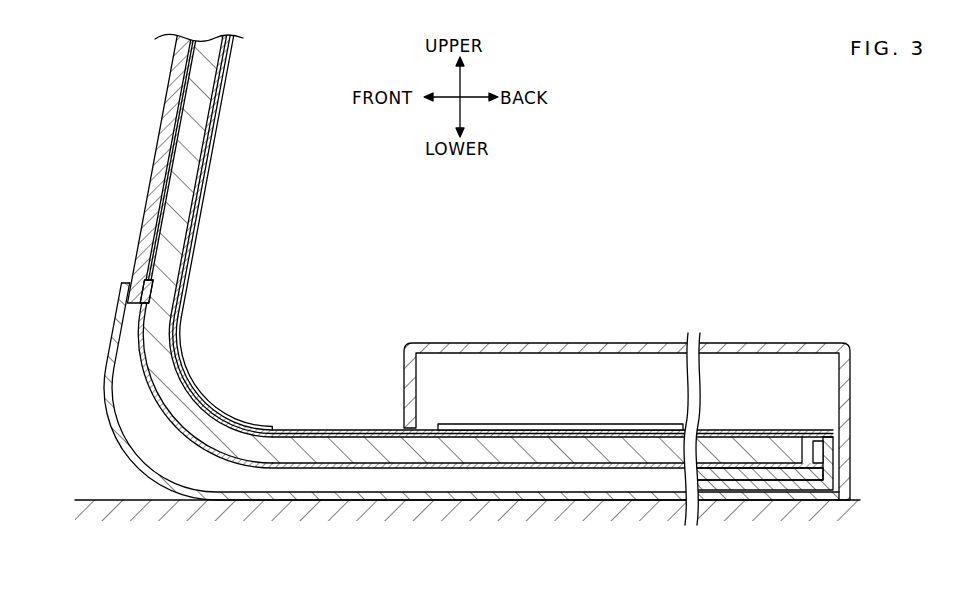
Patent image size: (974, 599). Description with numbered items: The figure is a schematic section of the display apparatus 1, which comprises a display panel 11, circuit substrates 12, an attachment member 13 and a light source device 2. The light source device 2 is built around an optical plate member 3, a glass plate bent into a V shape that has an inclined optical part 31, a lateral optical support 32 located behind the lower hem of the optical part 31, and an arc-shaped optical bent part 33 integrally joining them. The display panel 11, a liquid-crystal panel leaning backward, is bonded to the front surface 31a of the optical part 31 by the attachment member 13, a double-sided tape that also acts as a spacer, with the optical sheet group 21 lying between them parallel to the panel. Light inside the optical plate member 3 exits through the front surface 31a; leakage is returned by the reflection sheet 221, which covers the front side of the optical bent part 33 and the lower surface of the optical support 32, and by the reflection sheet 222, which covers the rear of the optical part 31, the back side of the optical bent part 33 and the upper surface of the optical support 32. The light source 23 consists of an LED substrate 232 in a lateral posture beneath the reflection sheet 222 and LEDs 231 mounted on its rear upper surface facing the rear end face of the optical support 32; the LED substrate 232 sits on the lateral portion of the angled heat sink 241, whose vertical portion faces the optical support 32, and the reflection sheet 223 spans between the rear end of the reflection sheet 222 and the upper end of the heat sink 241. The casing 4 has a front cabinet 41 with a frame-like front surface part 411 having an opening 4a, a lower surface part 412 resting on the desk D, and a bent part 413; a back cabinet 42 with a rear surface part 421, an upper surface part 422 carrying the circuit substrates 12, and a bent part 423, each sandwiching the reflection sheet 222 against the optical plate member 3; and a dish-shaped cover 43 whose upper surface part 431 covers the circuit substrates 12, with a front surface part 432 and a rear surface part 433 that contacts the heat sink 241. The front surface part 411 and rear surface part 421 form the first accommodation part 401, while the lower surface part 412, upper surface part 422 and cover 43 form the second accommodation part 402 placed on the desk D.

The display apparatus 1 is at (770, 175).
The light source device 2 is at (256, 362).
The optical sheet group 21 is at (172, 141).
The reflection sheet 221 is at (152, 393).
The reflection sheet 222 is at (174, 345).
The reflection sheet 223 is at (812, 434).
The optical plate member 3 is at (186, 186).
The optical part 31 is at (187, 231).
The front surface 31a is at (169, 183).
The optical support 32 is at (497, 455).
The optical bent part 33 is at (188, 392).
The casing 4 is at (442, 302).
The opening 4a is at (132, 281).
The front cabinet 41 is at (377, 491).
The front surface part 411 is at (123, 290).
The lower surface part 412 is at (386, 497).
The bent part 413 is at (125, 444).
The back cabinet 42 is at (350, 428).
The rear surface part 421 is at (217, 116).
The upper surface part 422 is at (321, 431).
The bent part 423 is at (214, 405).
The cover 43 is at (447, 343).
The upper surface part 431 is at (600, 343).
The front surface part 432 is at (417, 380).
The rear surface part 433 is at (840, 380).
The first accommodation part 401 is at (240, 160).
The second accommodation part 402 is at (502, 331).
The display panel 11 is at (172, 98).
The circuit substrate 12 is at (585, 424).
The attachment member 13 is at (151, 293).
The light source 23 is at (840, 557).
The LED 231 is at (812, 489).
The LED substrate 232 is at (773, 478).
The heat sink 241 is at (817, 441).
The desk D is at (103, 499).